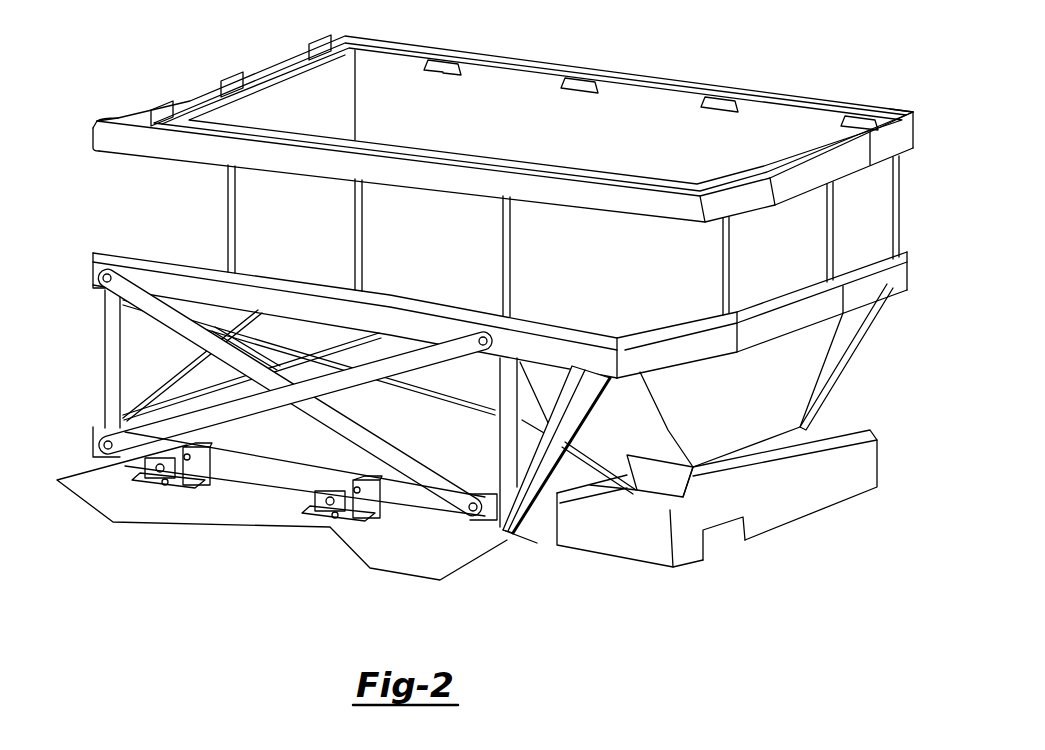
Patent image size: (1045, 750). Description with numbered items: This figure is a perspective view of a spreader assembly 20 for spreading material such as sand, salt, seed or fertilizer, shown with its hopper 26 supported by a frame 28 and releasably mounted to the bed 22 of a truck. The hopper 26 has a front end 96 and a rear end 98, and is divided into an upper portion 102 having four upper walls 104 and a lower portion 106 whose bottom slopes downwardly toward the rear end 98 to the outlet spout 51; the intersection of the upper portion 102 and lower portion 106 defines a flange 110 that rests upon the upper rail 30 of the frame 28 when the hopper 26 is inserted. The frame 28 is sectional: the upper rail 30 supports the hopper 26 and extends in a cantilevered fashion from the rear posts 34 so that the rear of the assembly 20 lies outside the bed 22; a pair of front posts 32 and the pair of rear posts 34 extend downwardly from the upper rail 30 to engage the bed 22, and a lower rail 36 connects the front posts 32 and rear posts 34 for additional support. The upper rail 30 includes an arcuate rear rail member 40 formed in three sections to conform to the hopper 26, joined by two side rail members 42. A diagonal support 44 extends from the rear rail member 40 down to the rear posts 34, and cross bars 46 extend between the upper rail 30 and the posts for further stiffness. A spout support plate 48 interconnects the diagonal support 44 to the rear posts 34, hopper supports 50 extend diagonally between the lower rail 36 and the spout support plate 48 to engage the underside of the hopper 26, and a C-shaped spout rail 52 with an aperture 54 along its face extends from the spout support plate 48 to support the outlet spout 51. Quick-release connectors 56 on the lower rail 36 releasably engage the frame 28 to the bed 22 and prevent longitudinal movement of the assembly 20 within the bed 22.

The spreader assembly 20 is at (145, 62).
The bed 22 is at (83, 478).
The hopper 26 is at (621, 66).
The frame 28 is at (90, 277).
The upper rail 30 is at (913, 250).
The front posts 32 is at (100, 384).
The rear posts 34 is at (497, 465).
The lower rail 36 is at (258, 473).
The rear rail member 40 is at (860, 297).
The side rail members 42 is at (257, 305).
The diagonal support 44 is at (510, 502).
The cross bars 46 is at (147, 305).
The spout support plate 48 is at (560, 547).
The hopper supports 50 is at (568, 457).
The outlet spout 51 is at (815, 426).
The spout rail 52 is at (634, 548).
The aperture 54 is at (708, 545).
The quick-release connector 56 is at (150, 494).
The front end 96 is at (114, 118).
The rear end 98 is at (912, 110).
The upper portion 102 is at (376, 106).
The upper walls 104 is at (238, 72).
The lower portion 106 is at (458, 403).
The flange 110 is at (766, 295).